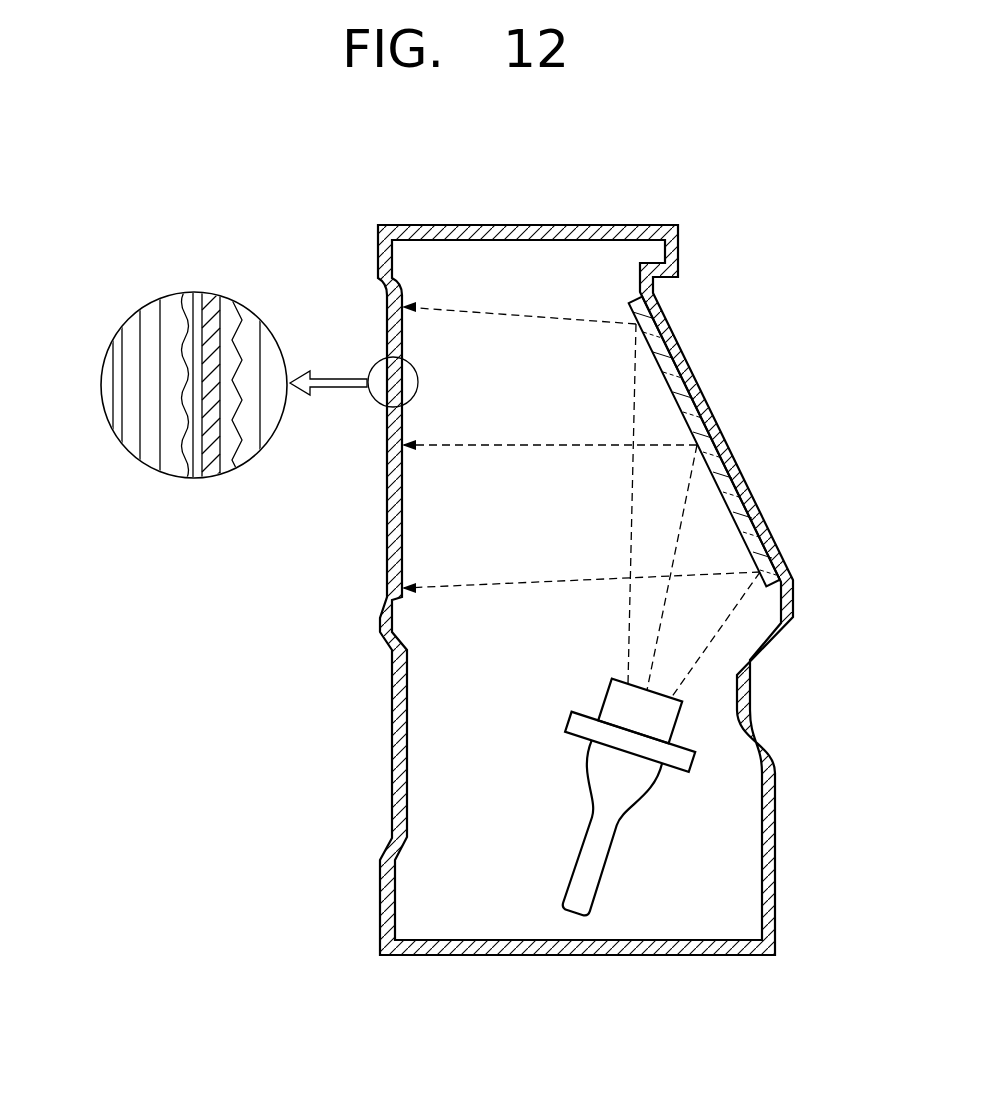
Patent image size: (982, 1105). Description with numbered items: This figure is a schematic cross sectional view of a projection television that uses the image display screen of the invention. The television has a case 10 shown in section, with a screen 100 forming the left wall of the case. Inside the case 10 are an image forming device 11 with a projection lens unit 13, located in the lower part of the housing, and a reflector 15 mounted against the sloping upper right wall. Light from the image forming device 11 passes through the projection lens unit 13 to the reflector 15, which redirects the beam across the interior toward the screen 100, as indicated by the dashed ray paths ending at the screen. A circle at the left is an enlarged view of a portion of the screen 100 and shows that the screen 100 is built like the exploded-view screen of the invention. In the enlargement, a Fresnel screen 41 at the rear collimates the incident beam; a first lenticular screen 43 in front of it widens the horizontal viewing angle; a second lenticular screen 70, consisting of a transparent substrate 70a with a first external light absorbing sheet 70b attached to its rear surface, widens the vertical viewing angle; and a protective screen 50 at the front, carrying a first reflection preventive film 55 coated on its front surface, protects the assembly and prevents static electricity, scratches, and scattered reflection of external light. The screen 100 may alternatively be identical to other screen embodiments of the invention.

The case 10 is at (338, 734).
The image forming device 11 is at (661, 836).
The projection lens unit 13 is at (609, 690).
The reflector 15 is at (733, 488).
The screen 100 is at (384, 522).
The second lenticular screen 70 is at (180, 364).
The transparent substrate 70a is at (168, 308).
The first external light absorbing sheet 70b is at (188, 386).
The first lenticular screen 43 is at (211, 390).
The Fresnel screen 41 is at (246, 385).
The first reflection preventive film 55 is at (117, 385).
The protective screen 50 is at (126, 385).